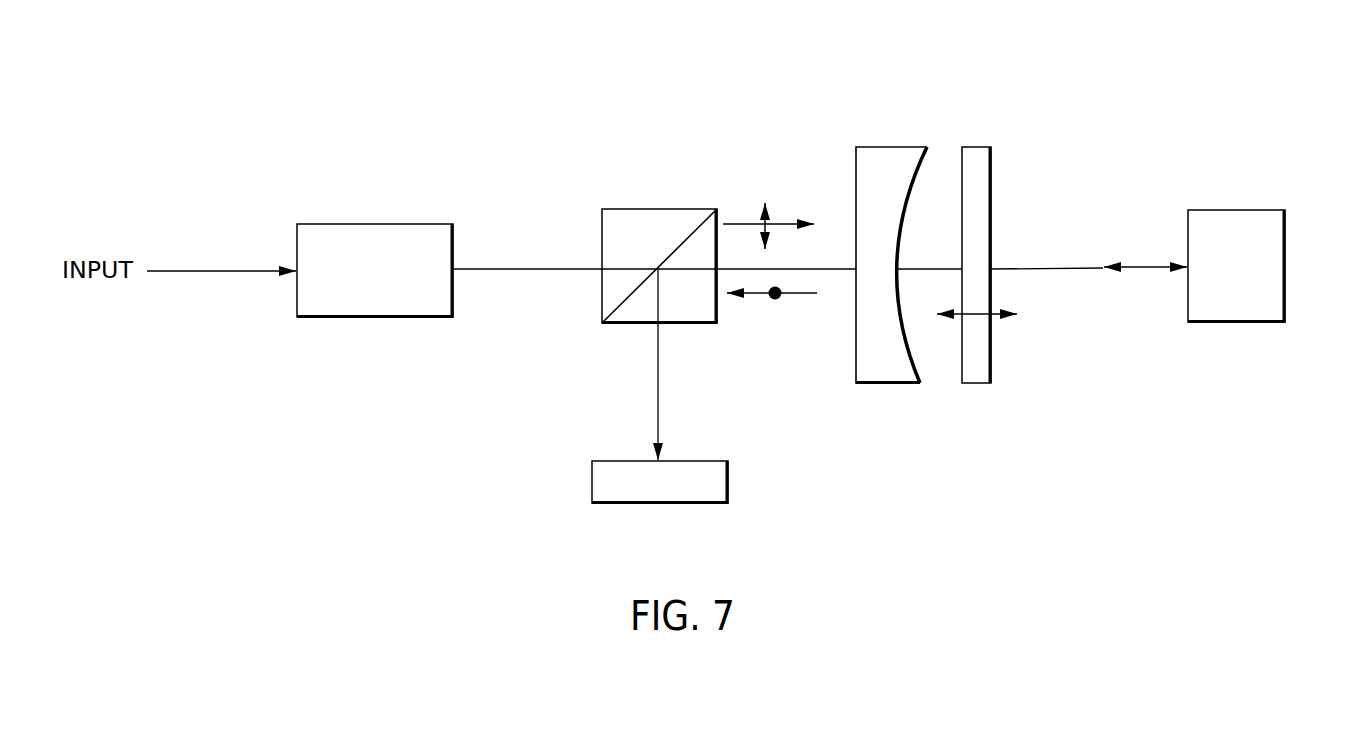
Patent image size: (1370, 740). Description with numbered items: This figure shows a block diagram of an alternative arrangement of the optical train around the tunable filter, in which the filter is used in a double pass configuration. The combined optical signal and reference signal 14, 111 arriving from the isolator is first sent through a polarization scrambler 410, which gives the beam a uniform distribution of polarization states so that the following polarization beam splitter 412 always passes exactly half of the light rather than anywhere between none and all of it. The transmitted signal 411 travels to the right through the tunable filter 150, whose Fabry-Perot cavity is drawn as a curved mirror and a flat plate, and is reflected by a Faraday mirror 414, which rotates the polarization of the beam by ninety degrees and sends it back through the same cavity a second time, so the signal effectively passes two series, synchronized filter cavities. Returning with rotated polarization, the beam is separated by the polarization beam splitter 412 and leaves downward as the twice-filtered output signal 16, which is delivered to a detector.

The optical signal 14 is at (221, 301).
The reference signal 111 is at (197, 272).
The polarization scrambler 410 is at (372, 318).
The polarization beam splitter 412 is at (693, 324).
The transmitted signal 411 is at (783, 222).
The tunable filter 150 is at (934, 261).
The Faraday mirror 414 is at (1245, 323).
The output signal 16 is at (656, 393).